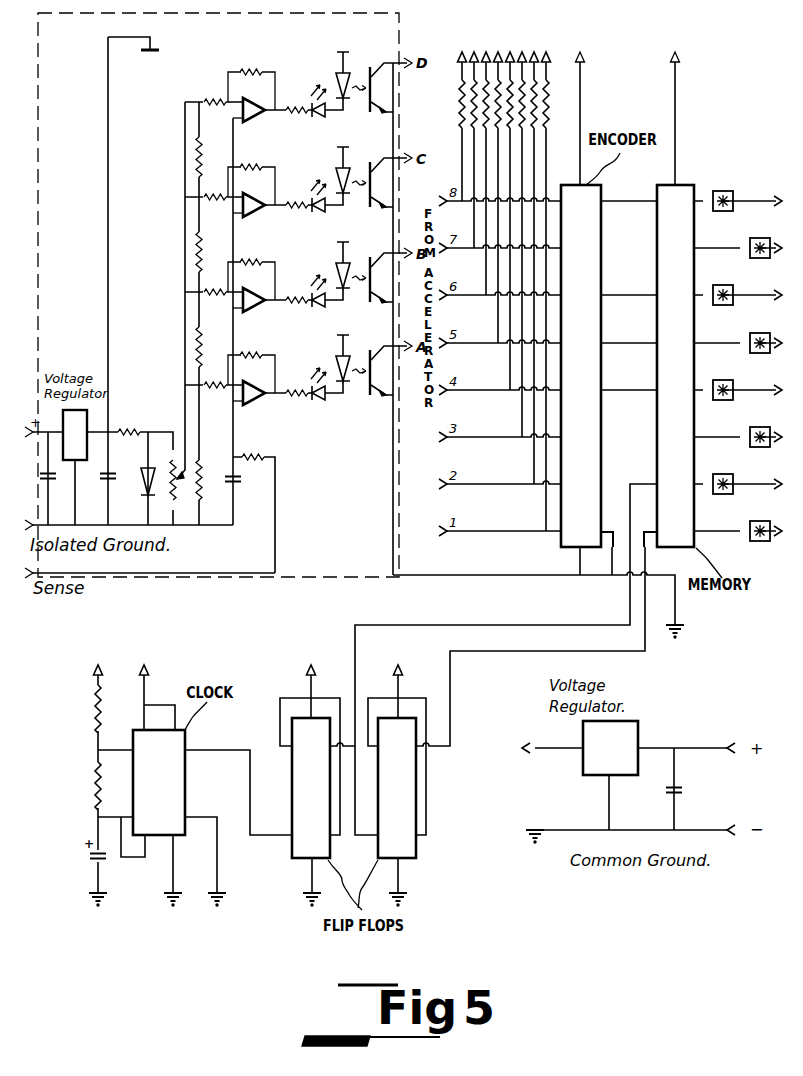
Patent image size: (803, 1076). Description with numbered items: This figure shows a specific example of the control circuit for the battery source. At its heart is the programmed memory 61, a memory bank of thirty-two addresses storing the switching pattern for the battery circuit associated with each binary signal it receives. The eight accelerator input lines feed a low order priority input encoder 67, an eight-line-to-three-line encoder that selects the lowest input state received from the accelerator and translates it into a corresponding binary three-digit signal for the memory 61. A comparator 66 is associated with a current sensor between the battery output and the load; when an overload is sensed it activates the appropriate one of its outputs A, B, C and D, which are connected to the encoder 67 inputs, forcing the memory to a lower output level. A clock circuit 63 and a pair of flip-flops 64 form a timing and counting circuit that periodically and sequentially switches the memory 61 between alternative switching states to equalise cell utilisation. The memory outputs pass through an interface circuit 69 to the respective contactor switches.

The programmed memory 61 is at (669, 366).
The clock circuit 63 is at (159, 782).
The flip-flops 64 is at (353, 785).
The comparator 66 is at (291, 583).
The low order priority input encoder 67 is at (587, 366).
The interface circuit 69 is at (758, 238).